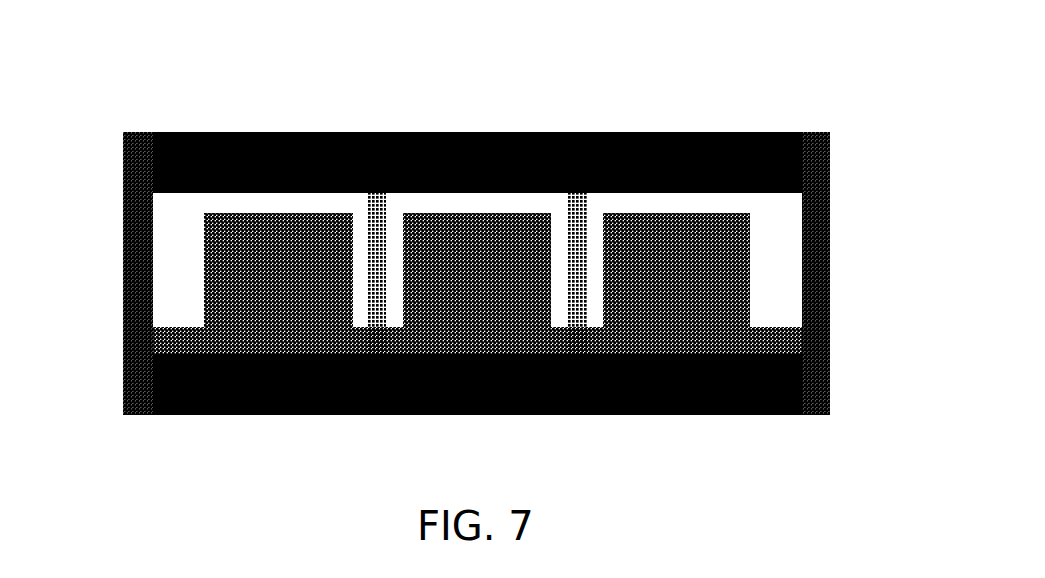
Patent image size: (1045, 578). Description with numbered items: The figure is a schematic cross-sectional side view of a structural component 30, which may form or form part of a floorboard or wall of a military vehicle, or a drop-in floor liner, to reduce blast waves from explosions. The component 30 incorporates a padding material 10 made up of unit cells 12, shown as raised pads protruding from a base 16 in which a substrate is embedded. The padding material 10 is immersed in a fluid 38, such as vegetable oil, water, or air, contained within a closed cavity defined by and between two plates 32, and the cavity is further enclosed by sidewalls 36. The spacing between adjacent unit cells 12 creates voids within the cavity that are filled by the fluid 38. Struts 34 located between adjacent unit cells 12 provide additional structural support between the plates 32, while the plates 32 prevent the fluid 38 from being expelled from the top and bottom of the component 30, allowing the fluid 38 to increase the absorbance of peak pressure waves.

The padding material 10 is at (480, 294).
The unit cells 12 is at (267, 312).
The base 16 is at (785, 340).
The structural component 30 is at (476, 254).
The plates 32 is at (633, 133).
The struts 34 is at (378, 222).
The sidewalls 36 is at (123, 192).
The fluid 38 is at (782, 262).